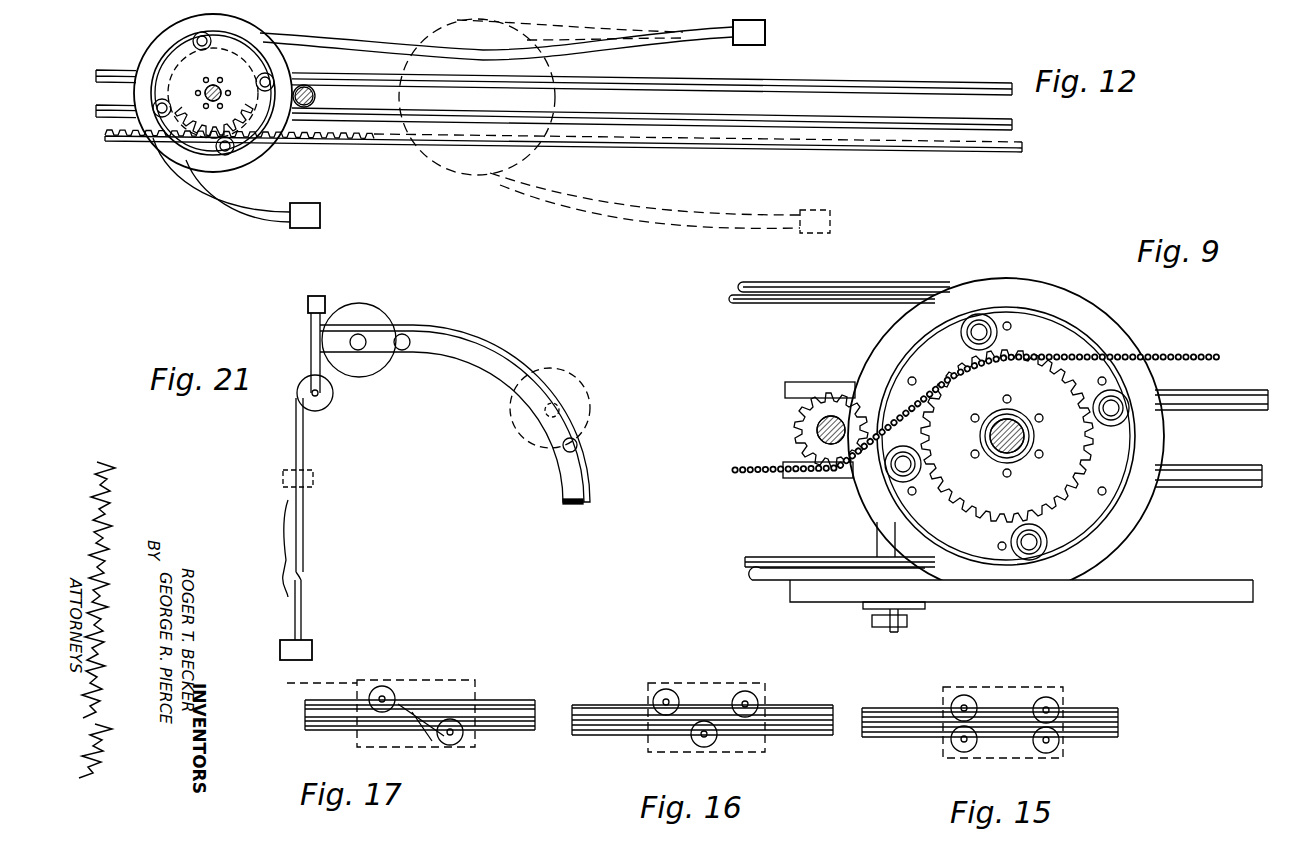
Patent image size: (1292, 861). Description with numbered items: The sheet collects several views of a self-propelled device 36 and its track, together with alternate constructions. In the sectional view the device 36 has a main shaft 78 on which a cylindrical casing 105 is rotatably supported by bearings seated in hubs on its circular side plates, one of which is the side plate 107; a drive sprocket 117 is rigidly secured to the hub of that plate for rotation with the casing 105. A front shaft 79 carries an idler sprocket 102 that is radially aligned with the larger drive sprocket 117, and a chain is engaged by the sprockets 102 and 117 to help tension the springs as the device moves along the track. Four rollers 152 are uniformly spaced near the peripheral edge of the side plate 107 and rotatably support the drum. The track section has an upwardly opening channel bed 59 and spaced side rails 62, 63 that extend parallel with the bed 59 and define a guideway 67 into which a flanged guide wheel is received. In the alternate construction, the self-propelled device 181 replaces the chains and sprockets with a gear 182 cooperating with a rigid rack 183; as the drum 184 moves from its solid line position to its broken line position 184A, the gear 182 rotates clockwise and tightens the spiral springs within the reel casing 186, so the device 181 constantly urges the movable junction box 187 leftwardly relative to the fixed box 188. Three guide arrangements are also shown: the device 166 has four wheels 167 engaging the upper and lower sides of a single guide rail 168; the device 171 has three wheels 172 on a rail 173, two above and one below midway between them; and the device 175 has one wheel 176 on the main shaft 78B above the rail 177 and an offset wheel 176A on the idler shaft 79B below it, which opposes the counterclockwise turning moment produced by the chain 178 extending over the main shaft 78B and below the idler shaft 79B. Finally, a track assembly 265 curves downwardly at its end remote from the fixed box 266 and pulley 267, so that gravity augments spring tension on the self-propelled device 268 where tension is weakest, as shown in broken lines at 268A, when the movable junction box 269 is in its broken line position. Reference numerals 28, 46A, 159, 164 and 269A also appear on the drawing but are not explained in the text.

In FIG. 12, the cable 28 is at (205, 198).
In FIG. 9, the cable 28 is at (762, 288).
In FIG. 9, the self-propelled device 36 is at (1028, 419).
In FIG. 9, the support post 46A is at (880, 546).
In FIG. 9, the channel bed 59 is at (1228, 592).
In FIG. 9, the side rail 62 is at (1283, 370).
In FIG. 9, the side rail 63 is at (1252, 487).
In FIG. 9, the guideway 67 is at (1252, 465).
In FIG. 9, the main shaft 78 is at (1020, 436).
In FIG. 17, the main shaft 78B is at (388, 700).
In FIG. 9, the front shaft 79 is at (818, 433).
In FIG. 17, the idler shaft 79B is at (458, 742).
In FIG. 9, the idler sprocket 102 is at (835, 393).
In FIG. 9, the cylindrical casing 105 is at (1080, 328).
In FIG. 9, the side plate 107 is at (1080, 470).
In FIG. 9, the drive sprocket 117 is at (985, 492).
In FIG. 9, the rollers 152 is at (985, 322).
In FIG. 9, the wheel 159 is at (1052, 297).
In FIG. 9, the rail 164 is at (785, 305).
In FIG. 15, the self-propelled device 166 is at (985, 688).
In FIG. 15, the wheels 167 is at (1048, 738).
In FIG. 15, the guide rail 168 is at (1118, 723).
In FIG. 16, the self-propelled device 171 is at (712, 683).
In FIG. 16, the wheels 172 is at (748, 718).
In FIG. 16, the rail 173 is at (765, 722).
In FIG. 17, the self-propelled device 175 is at (452, 680).
In FIG. 17, the wheel 176 is at (381, 686).
In FIG. 17, the wheel 176A is at (445, 745).
In FIG. 17, the rail 177 is at (492, 716).
In FIG. 17, the chain 178 is at (510, 747).
In FIG. 12, the self-propelled device 181 is at (155, 24).
In FIG. 12, the gear 182 is at (230, 64).
In FIG. 12, the rack 183 is at (352, 140).
In FIG. 12, the drum 184 is at (165, 55).
In FIG. 12, the broken line position of drum 184A is at (601, 118).
In FIG. 12, the reel casing 186 is at (260, 118).
In FIG. 12, the movable junction box 187 is at (320, 215).
In FIG. 12, the fixed box 188 is at (765, 32).
In FIG. 21, the track assembly 265 is at (468, 326).
In FIG. 21, the fixed box 266 is at (320, 297).
In FIG. 21, the pulley 267 is at (325, 405).
In FIG. 21, the self-propelled device 268 is at (390, 312).
In FIG. 21, the broken line position of self-propelled device 268A is at (575, 372).
In FIG. 21, the movable junction box 269 is at (308, 648).
In FIG. 21, the guide 269A is at (313, 480).